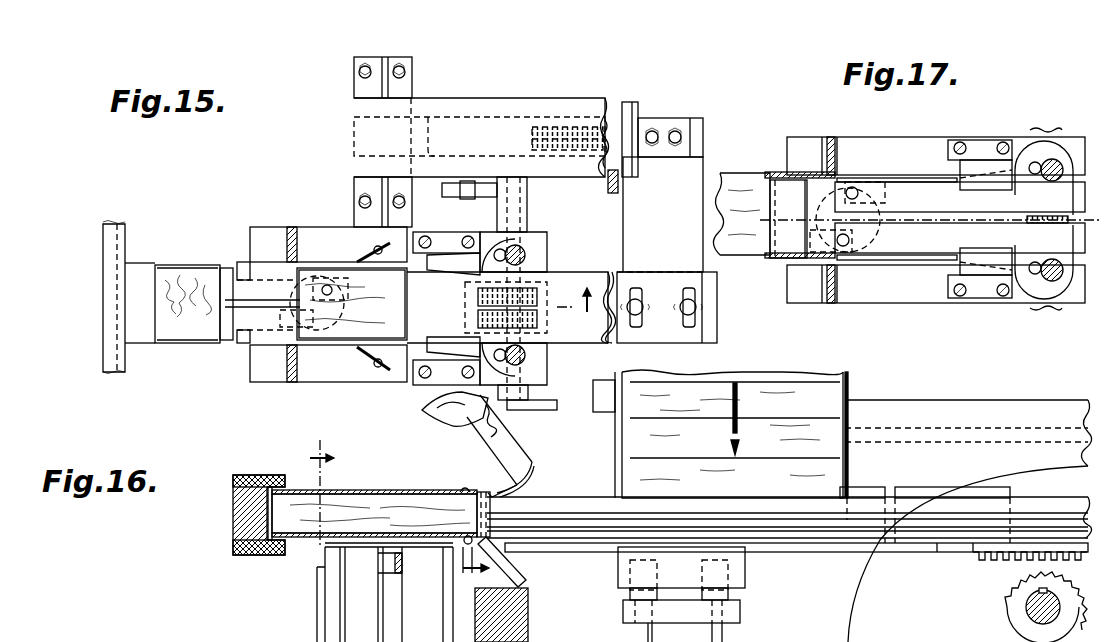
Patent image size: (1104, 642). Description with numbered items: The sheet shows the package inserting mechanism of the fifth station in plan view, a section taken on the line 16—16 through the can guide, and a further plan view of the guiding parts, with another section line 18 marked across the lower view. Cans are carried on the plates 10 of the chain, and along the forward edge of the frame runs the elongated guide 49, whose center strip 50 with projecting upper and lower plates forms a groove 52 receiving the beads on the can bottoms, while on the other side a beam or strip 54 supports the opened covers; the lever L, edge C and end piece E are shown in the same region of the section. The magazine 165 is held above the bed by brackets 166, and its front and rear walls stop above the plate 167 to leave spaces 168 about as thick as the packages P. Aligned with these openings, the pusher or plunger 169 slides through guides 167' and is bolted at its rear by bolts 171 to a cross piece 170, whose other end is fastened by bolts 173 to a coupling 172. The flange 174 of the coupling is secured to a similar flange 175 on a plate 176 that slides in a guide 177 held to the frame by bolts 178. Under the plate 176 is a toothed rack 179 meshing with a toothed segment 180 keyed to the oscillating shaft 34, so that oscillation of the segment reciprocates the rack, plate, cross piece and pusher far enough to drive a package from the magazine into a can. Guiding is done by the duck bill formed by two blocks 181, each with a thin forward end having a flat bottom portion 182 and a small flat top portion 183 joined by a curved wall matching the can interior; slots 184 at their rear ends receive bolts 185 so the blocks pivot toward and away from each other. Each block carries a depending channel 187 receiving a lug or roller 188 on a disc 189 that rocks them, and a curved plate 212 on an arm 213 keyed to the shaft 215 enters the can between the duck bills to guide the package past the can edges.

In FIG. 16, the plates 10 is at (370, 547).
In FIG. 15, the section line 16— 16 is at (582, 307).
In FIG. 16, the section line 18 is at (310, 461).
In FIG. 15, the oscillating shaft 34 is at (613, 192).
In FIG. 16, the elongated guide 49 is at (234, 474).
In FIG. 16, the center strip 50 is at (233, 518).
In FIG. 16, the groove 52 is at (268, 545).
In FIG. 16, the beam or strip 54 is at (528, 622).
In FIG. 16, the magazine 165 is at (845, 378).
In FIG. 15, the brackets 166 is at (291, 232).
In FIG. 17, the brackets 166 is at (828, 147).
In FIG. 15, the plate 167 is at (328, 319).
In FIG. 17, the plate 167 is at (936, 220).
In FIG. 16, the plate 167 is at (985, 572).
In FIG. 15, the guides 167' is at (448, 308).
In FIG. 17, the guides 167' is at (966, 217).
In FIG. 16, the guides 167' is at (968, 545).
In FIG. 16, the spaces 168 is at (615, 495).
In FIG. 15, the pusher or plunger 169 is at (565, 275).
In FIG. 17, the pusher or plunger 169 is at (785, 240).
In FIG. 16, the pusher or plunger 169 is at (590, 515).
In FIG. 15, the cross piece 170 is at (667, 250).
In FIG. 15, the bolts 171 is at (640, 315).
In FIG. 15, the coupling 172 is at (665, 118).
In FIG. 15, the bolts 173 is at (675, 143).
In FIG. 15, the flange 174 is at (628, 112).
In FIG. 15, the flange 175 is at (625, 105).
In FIG. 15, the plate 176 is at (420, 142).
In FIG. 15, the guide 177 is at (470, 98).
In FIG. 15, the bolts 178 is at (368, 67).
In FIG. 15, the toothed rack 179 is at (542, 127).
In FIG. 15, the toothed segment 180 is at (590, 152).
In FIG. 15, the blocks 181 is at (423, 240).
In FIG. 17, the blocks 181 is at (930, 217).
In FIG. 16, the blocks 181 is at (530, 470).
In FIG. 15, the flat bottom portion 182 is at (232, 285).
In FIG. 15, the small flat portion 183 is at (245, 272).
In FIG. 15, the slots 184 is at (515, 245).
In FIG. 17, the slots 184 is at (1035, 165).
In FIG. 15, the bolts 185 is at (525, 255).
In FIG. 17, the bolts 185 is at (1055, 160).
In FIG. 17, the depending channel 187 is at (880, 190).
In FIG. 15, the lug or roller 188 is at (333, 270).
In FIG. 17, the lug or roller 188 is at (858, 185).
In FIG. 16, the lug or roller 188 is at (630, 580).
In FIG. 16, the disc 189 is at (745, 612).
In FIG. 16, the curved plate 212 is at (505, 482).
In FIG. 16, the arm 213 is at (505, 435).
In FIG. 16, the shaft 215 is at (450, 420).
In FIG. 16, the cutting edge C is at (426, 489).
In FIG. 15, the end piece E is at (170, 342).
In FIG. 16, the lever L is at (515, 575).
In FIG. 15, the packages P is at (350, 330).
In FIG. 17, the packages P is at (740, 180).
In FIG. 16, the packages P is at (365, 502).